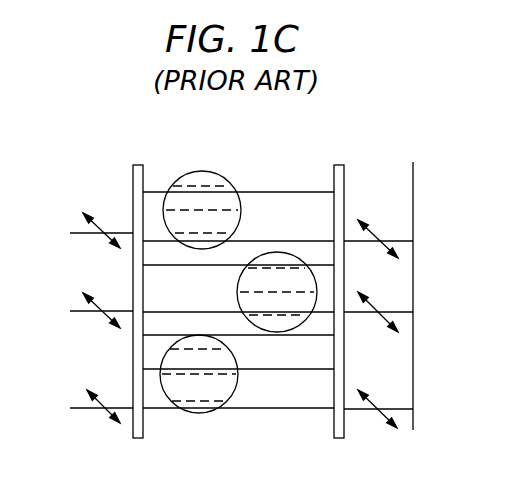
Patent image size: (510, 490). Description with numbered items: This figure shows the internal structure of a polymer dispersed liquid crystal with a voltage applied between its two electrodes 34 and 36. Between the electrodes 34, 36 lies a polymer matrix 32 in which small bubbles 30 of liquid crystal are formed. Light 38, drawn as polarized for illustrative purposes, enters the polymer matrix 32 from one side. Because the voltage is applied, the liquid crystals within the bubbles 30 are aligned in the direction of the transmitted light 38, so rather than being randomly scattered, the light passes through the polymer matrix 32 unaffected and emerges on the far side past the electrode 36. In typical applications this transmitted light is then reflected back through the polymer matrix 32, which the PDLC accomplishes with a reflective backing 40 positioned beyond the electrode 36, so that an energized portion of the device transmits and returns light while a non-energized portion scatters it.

The bubbles of liquid crystal 30 is at (204, 172).
The polymer matrix 32 is at (307, 437).
The electrode 34 is at (143, 438).
The electrode 36 is at (345, 430).
The light 38 is at (77, 233).
The reflective backing 40 is at (413, 430).